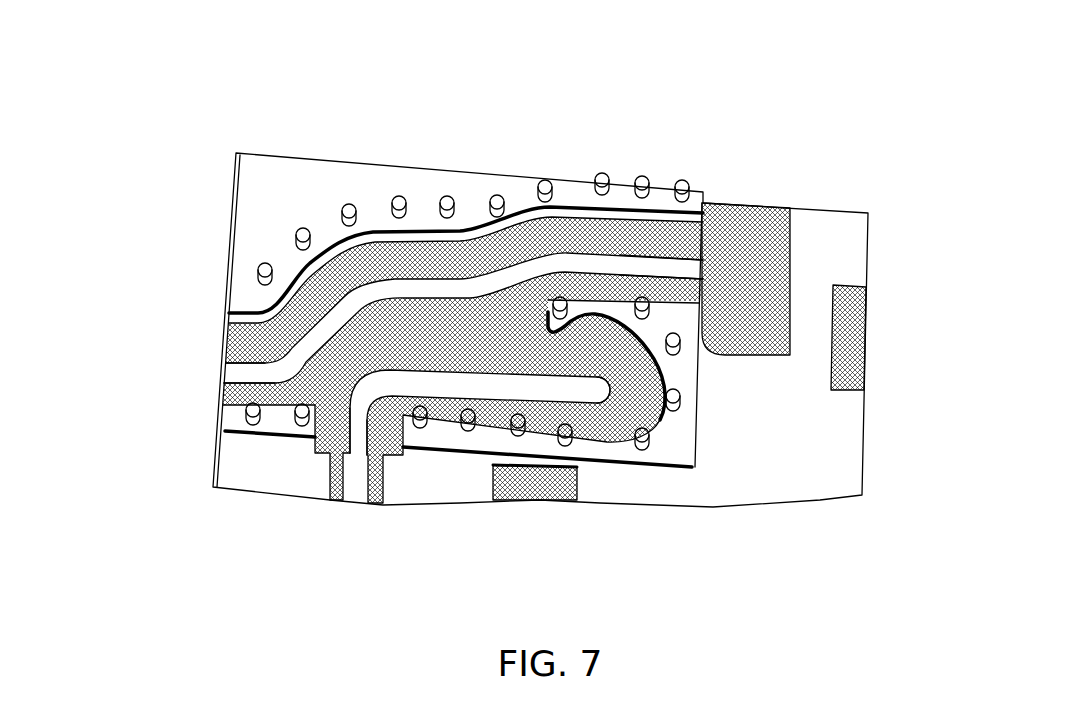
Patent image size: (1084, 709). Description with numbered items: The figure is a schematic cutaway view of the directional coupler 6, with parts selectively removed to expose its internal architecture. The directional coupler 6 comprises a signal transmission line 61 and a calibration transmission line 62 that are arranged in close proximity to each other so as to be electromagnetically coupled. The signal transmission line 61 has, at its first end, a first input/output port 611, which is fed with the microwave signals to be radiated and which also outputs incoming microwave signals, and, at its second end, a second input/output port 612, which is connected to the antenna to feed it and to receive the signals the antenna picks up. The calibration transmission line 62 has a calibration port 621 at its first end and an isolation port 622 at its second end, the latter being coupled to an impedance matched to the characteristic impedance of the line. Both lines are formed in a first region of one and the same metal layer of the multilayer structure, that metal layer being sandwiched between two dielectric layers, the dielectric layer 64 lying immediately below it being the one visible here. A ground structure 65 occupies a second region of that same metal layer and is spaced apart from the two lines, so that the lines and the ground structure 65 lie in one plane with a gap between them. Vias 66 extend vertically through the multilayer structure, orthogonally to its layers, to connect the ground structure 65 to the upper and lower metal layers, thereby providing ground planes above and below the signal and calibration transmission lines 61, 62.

The directional coupler 6 is at (160, 112).
The signal transmission line 61 is at (445, 370).
The first input/output port 611 is at (358, 474).
The second input/output port 612 is at (600, 390).
The calibration transmission line 62 is at (457, 287).
The calibration port 621 is at (228, 372).
The isolation port 622 is at (685, 273).
The dielectric layer 64 is at (687, 245).
The ground structure 65 is at (248, 208).
The vias 66 is at (303, 233).